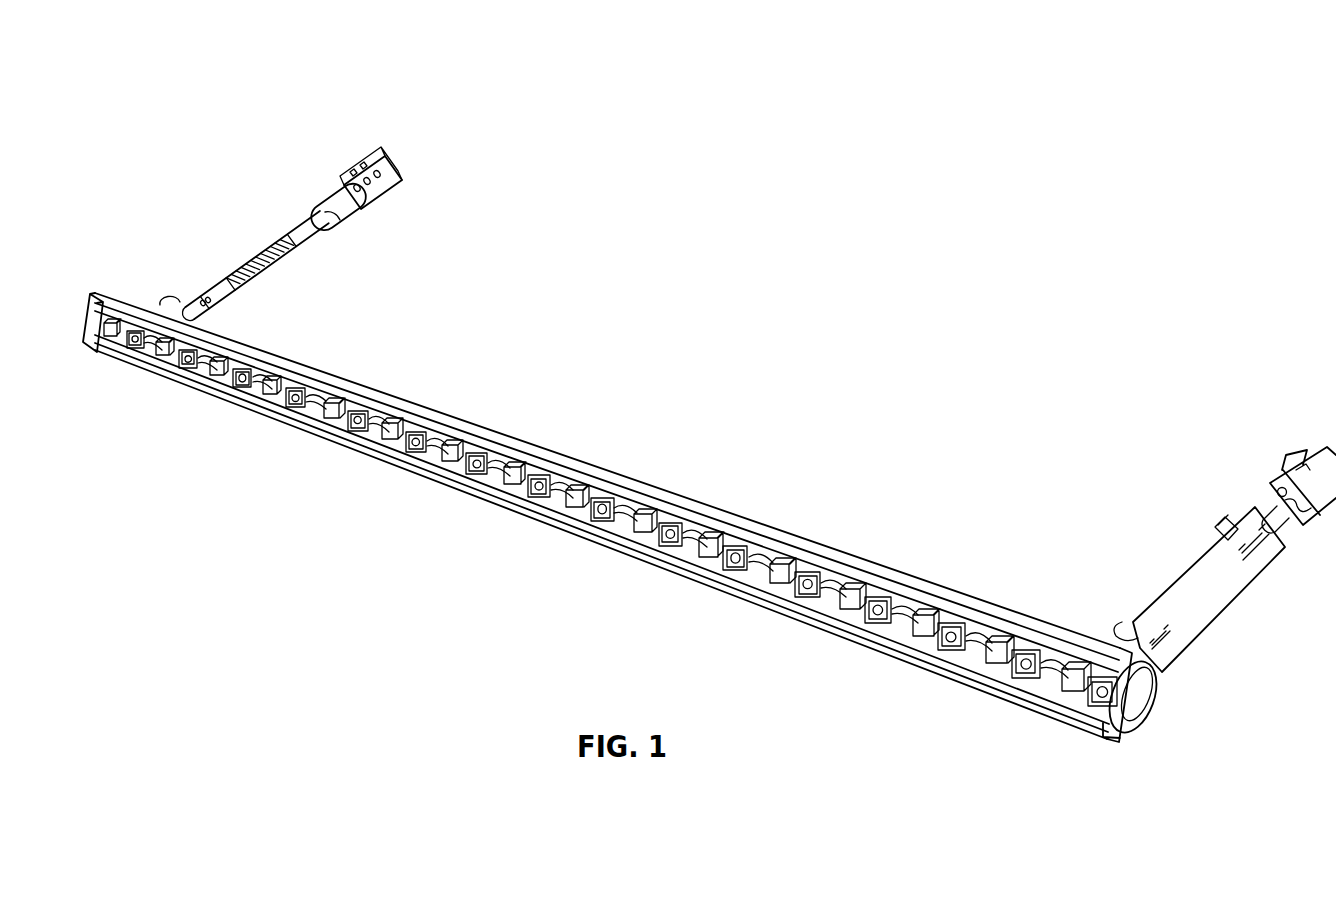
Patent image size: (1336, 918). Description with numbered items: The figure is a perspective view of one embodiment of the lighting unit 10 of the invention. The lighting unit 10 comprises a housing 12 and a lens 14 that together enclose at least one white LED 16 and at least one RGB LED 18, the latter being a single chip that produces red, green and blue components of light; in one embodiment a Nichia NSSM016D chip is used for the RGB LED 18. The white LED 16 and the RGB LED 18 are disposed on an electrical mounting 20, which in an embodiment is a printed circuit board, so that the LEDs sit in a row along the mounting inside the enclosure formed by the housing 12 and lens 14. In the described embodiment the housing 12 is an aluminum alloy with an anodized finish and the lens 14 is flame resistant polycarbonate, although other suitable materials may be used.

The lighting unit 10 is at (437, 116).
The housing 12 is at (1152, 707).
The lens 14 is at (1010, 685).
The white LED 16 is at (300, 388).
The RGB LED 18 is at (267, 388).
The electrical mounting 20 is at (437, 437).